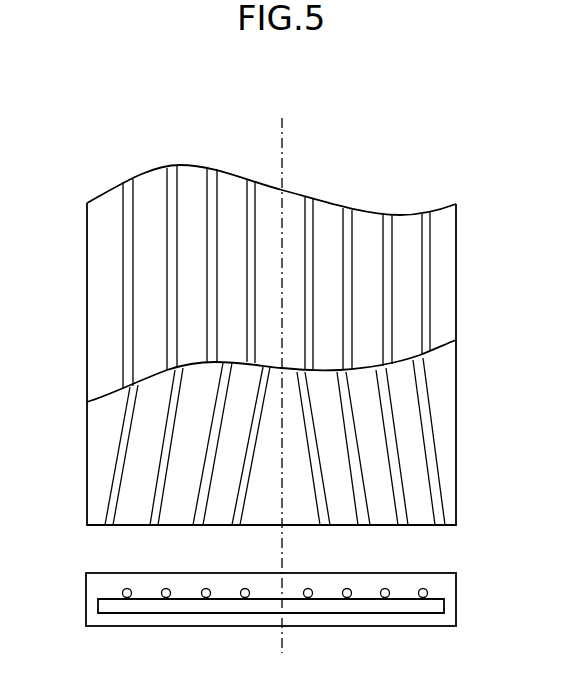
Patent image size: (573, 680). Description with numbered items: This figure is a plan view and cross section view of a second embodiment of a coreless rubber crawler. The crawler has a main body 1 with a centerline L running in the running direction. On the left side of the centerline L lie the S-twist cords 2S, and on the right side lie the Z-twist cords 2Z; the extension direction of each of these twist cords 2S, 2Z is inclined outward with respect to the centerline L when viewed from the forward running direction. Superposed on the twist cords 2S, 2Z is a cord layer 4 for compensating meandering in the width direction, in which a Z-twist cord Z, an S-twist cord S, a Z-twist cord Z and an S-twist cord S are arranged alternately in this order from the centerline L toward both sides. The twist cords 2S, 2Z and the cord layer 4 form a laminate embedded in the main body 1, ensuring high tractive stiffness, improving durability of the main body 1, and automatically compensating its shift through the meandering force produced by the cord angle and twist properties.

The main body 1 is at (452, 595).
The cord layer 4 is at (448, 292).
The centerline L is at (283, 147).
The S-twist cord S is at (130, 217).
The Z-twist cord Z is at (178, 198).
The S-twist cords 2S is at (120, 448).
The Z-twist cords 2Z is at (425, 437).